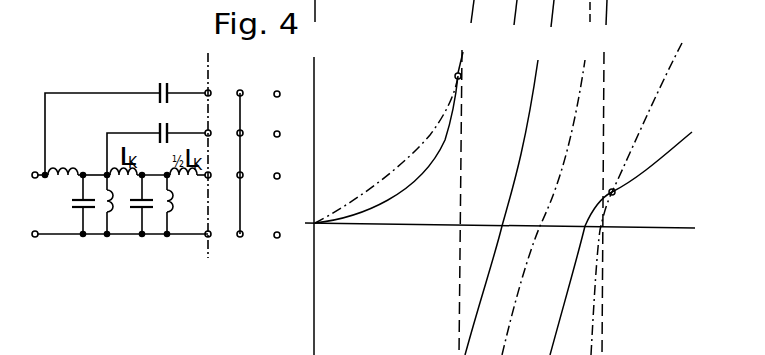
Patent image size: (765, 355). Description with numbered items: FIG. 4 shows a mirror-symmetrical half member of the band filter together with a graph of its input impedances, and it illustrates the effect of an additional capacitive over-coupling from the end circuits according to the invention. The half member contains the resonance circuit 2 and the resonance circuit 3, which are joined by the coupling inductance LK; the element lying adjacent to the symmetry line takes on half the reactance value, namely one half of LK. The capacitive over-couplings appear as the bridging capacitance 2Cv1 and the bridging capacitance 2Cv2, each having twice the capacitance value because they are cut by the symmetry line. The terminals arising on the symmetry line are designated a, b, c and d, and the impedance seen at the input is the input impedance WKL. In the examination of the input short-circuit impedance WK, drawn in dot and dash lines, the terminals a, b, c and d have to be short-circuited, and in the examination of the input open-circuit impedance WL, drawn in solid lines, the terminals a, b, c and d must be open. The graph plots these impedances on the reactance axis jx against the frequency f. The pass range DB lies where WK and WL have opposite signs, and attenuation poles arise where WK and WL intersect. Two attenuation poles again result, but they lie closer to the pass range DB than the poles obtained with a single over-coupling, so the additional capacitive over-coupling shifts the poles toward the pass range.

The resonance circuit 2 is at (87, 204).
The resonance circuit 3 is at (145, 204).
The coupling inductance LK is at (63, 158).
The bridging capacitance 2Cv1 is at (163, 121).
The bridging capacitance 2Cv2 is at (175, 76).
The input impedance WKL is at (60, 220).
The terminal a is at (248, 92).
The terminal b is at (248, 132).
The terminal c is at (248, 174).
The terminal d is at (248, 233).
The reactance axis jx is at (303, 186).
The frequency f is at (686, 217).
The pass range DB is at (640, 48).
The input short-circuit impedance WK is at (410, 155).
The input open-circuit impedance WL is at (428, 178).